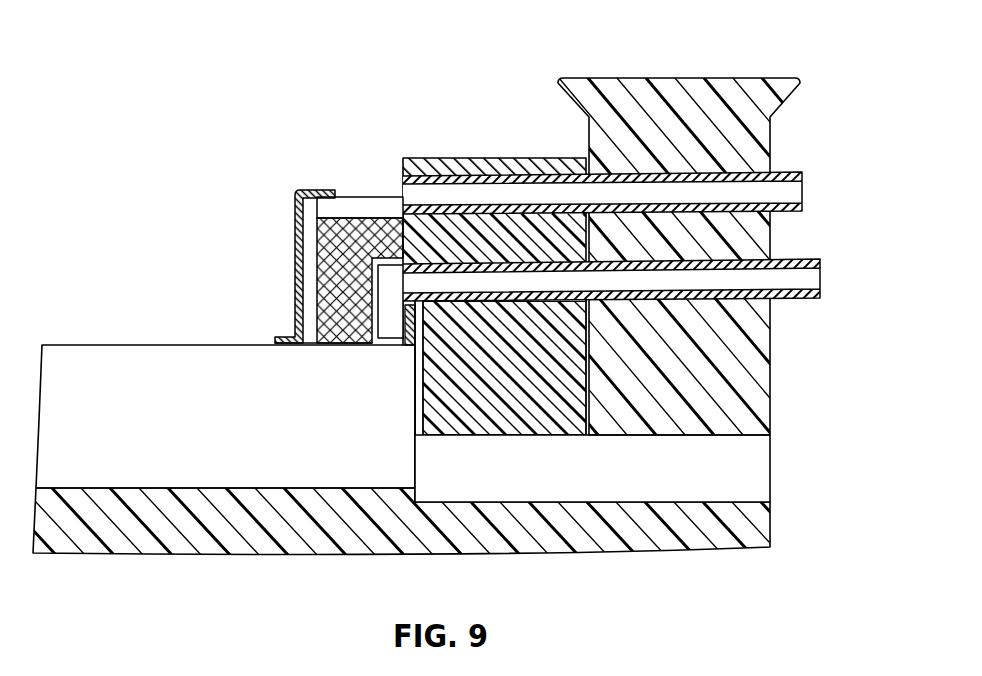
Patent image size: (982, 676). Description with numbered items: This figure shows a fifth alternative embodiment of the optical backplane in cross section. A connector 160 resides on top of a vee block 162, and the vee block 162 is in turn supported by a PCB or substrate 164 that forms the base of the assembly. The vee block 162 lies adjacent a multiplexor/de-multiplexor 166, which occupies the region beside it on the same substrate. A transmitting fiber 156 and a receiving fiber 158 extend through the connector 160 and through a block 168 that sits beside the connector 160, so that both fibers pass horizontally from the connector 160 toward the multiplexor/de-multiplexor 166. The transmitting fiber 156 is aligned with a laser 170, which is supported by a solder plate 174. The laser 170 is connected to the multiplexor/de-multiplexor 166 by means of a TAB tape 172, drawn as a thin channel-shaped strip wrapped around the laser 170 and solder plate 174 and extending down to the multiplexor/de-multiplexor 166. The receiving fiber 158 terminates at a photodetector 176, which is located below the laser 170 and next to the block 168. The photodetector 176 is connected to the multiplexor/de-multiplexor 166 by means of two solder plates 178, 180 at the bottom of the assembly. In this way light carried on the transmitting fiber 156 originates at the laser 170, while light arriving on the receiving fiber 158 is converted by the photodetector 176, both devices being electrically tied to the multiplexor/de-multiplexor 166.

The transmitting fiber 156 is at (804, 186).
The receiving fiber 158 is at (822, 282).
The connector 160 is at (778, 77).
The vee block 162 is at (612, 484).
The PCB or substrate 164 is at (769, 518).
The multiplexor/de-multiplexor 166 is at (257, 441).
The block 168 is at (505, 158).
The laser 170 is at (360, 206).
The TAB tape 172 is at (295, 271).
The solder plate 174 is at (337, 243).
The photodetector 176 is at (394, 318).
The solder plate 178 is at (338, 347).
The solder plate 180 is at (393, 344).